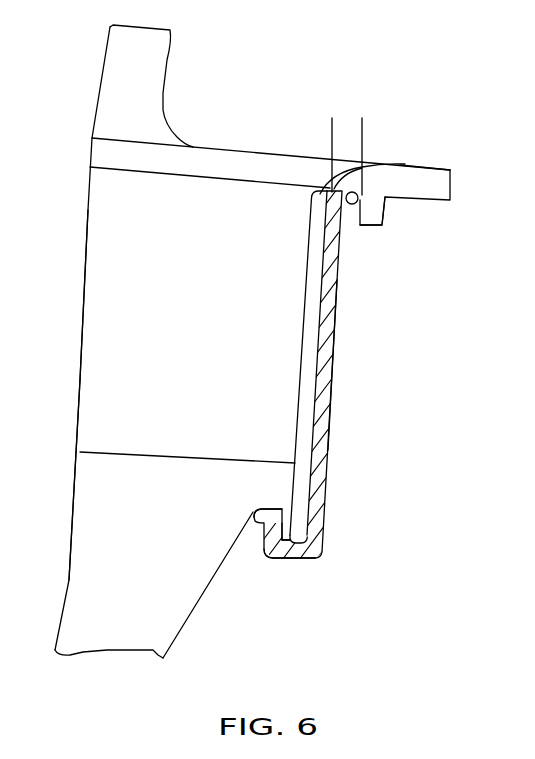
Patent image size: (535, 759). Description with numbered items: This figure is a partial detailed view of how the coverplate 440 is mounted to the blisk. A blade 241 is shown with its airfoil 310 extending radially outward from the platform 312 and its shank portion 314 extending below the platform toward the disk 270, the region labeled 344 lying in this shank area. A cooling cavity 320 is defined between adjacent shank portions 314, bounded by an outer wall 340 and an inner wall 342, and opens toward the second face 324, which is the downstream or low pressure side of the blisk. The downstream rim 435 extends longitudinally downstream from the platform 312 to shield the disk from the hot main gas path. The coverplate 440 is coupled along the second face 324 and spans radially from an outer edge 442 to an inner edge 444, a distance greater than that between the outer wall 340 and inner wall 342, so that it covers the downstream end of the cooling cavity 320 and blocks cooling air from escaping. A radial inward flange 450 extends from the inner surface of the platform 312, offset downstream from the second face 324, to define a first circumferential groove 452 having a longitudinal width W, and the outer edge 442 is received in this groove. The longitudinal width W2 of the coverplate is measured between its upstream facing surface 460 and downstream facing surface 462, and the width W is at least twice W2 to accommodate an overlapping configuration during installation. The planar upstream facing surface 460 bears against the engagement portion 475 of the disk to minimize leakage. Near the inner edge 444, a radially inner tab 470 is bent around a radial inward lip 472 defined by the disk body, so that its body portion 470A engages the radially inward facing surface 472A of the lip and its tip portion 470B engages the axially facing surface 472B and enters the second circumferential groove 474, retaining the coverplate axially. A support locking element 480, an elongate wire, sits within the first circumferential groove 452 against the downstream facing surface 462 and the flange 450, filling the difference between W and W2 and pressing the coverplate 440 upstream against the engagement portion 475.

The blade 241 is at (157, 47).
The airfoil 310 is at (101, 82).
The platform 312 is at (215, 157).
The shank portion 314 is at (86, 320).
The cooling cavity 320 is at (100, 416).
The second face 324 is at (184, 632).
The outer wall 340 is at (187, 178).
The inner wall 342 is at (190, 457).
The wall region 344 is at (157, 434).
The disk 270 is at (88, 645).
The downstream rim 435 is at (444, 181).
The coverplate 440 is at (336, 323).
The outer edge 442 is at (333, 190).
The inner edge 444 is at (322, 546).
The radial inward flange 450 is at (384, 208).
The first circumferential groove 452 is at (350, 232).
The upstream facing surface 460 is at (310, 425).
The downstream facing surface 462 is at (331, 413).
The radially inner tab 470 is at (289, 559).
The body portion 470A is at (308, 559).
The tip portion 470B is at (262, 515).
The radial inward lip 472 is at (305, 522).
The radially inward facing surface 472A is at (301, 559).
The axially facing surface 472B is at (275, 533).
The second circumferential groove 474 is at (252, 548).
The engagement portion 475 is at (314, 351).
The support locking element 480 is at (407, 170).
The longitudinal width W is at (300, 137).
The longitudinal width W2 is at (338, 352).